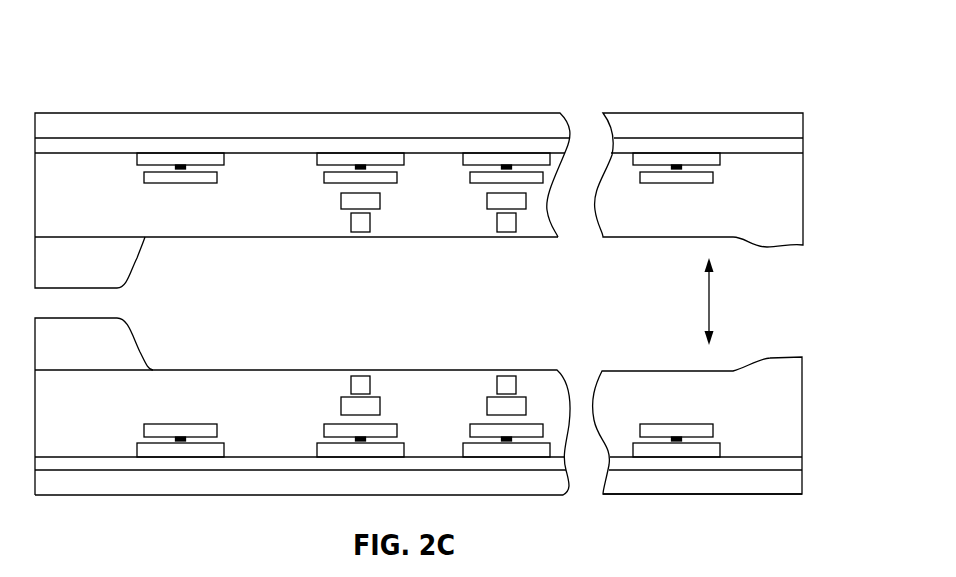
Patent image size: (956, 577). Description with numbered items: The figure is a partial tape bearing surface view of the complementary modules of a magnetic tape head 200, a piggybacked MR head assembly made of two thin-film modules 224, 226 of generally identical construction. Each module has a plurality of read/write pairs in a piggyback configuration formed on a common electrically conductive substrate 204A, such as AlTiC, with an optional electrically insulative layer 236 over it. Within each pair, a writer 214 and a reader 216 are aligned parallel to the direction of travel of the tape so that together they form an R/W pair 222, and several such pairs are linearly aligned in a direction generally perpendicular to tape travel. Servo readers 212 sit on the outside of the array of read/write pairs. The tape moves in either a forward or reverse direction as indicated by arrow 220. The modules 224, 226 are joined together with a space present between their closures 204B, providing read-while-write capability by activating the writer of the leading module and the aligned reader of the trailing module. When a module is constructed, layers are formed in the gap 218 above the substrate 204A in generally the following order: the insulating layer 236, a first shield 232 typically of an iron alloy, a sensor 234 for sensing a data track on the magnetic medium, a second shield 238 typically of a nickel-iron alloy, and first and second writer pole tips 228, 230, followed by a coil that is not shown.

The magnetic tape head 200 is at (352, 100).
The substrate 204A is at (162, 136).
The closure 204B is at (133, 262).
The servo reader 212 is at (222, 410).
The writer 214 is at (432, 405).
The reader 216 is at (450, 445).
The gap 218 is at (225, 237).
The arrow 220 is at (709, 307).
The R/W pair 222 is at (369, 347).
The thin-film module 224 is at (728, 113).
The thin-film module 226 is at (717, 494).
The first writer pole tip 228 is at (340, 405).
The second writer pole tip 230 is at (352, 382).
The first shield 232 is at (318, 448).
The sensor 234 is at (310, 433).
The insulating layer 236 is at (793, 450).
The second shield 238 is at (325, 423).